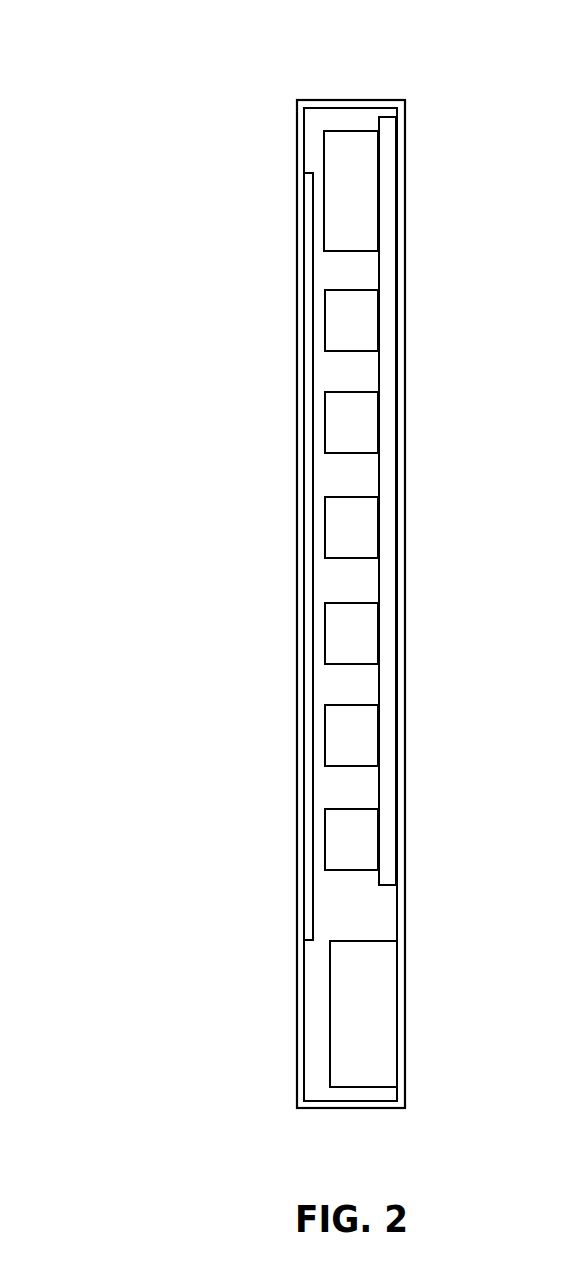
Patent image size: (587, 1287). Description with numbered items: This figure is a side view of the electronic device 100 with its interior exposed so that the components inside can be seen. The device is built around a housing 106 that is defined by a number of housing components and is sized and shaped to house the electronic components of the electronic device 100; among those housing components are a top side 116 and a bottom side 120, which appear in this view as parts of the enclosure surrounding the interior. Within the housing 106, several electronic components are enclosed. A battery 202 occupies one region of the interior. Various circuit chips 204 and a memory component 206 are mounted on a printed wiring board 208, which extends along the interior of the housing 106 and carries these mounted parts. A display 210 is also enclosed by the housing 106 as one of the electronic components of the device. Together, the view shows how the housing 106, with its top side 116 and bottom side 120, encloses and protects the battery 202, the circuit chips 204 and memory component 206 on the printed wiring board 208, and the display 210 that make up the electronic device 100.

The electronic device 100 is at (99, 91).
The housing 106 is at (296, 137).
The top side 116 is at (304, 1014).
The bottom side 120 is at (402, 915).
The battery 202 is at (383, 1021).
The circuit chips 204 is at (372, 430).
The memory component 206 is at (368, 189).
The printed wiring board 208 is at (390, 685).
The display 210 is at (316, 909).